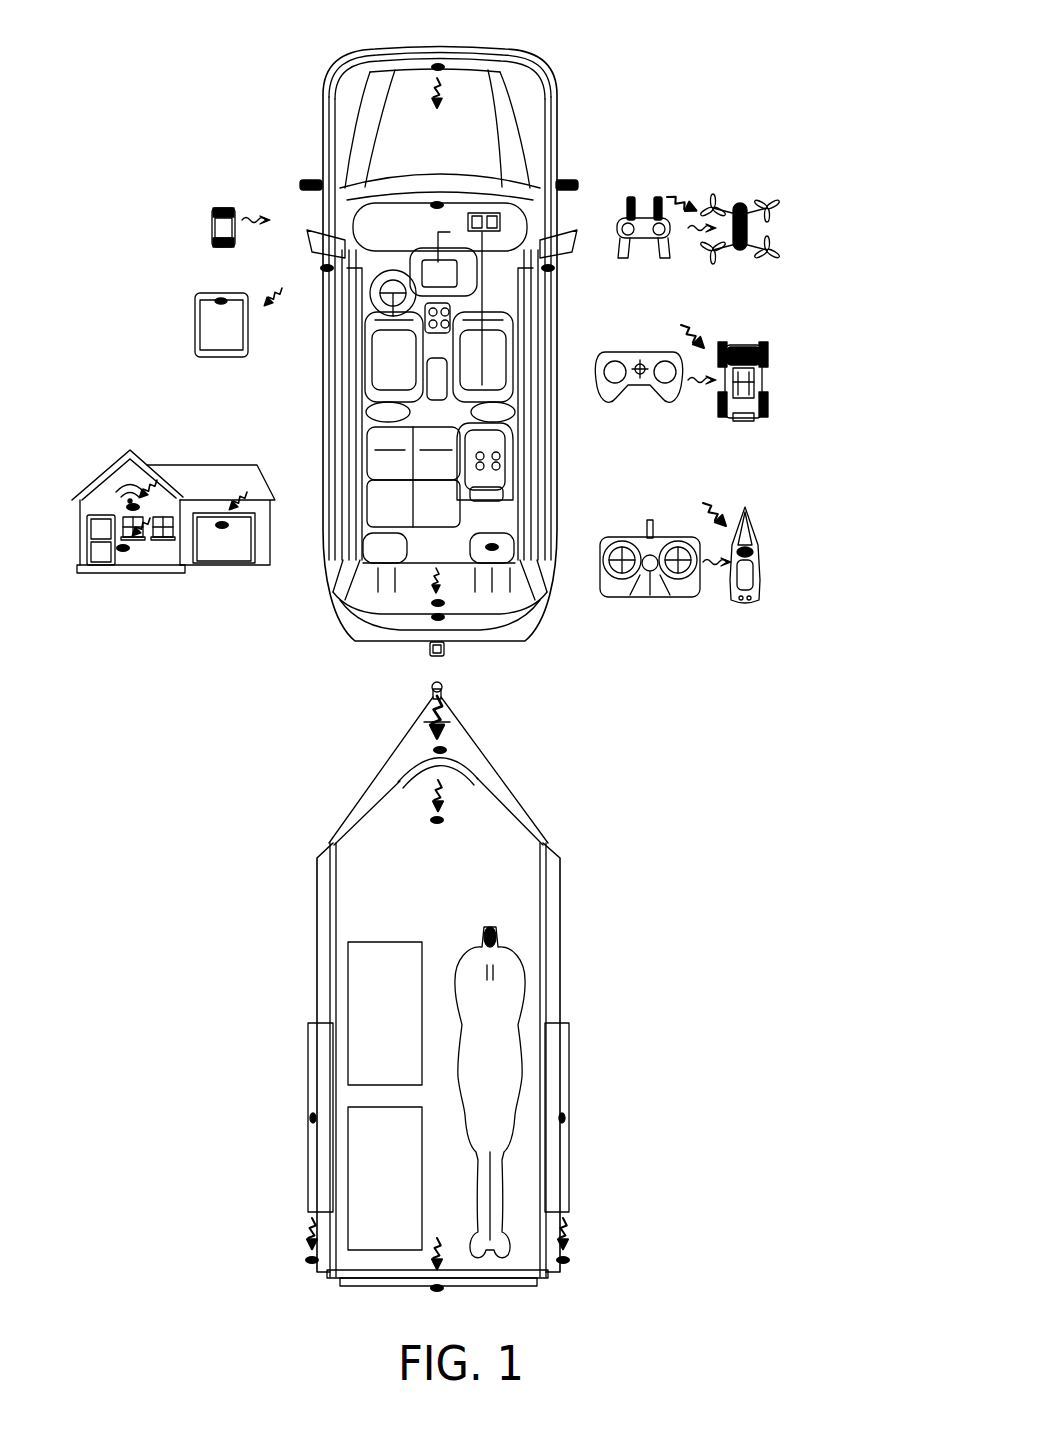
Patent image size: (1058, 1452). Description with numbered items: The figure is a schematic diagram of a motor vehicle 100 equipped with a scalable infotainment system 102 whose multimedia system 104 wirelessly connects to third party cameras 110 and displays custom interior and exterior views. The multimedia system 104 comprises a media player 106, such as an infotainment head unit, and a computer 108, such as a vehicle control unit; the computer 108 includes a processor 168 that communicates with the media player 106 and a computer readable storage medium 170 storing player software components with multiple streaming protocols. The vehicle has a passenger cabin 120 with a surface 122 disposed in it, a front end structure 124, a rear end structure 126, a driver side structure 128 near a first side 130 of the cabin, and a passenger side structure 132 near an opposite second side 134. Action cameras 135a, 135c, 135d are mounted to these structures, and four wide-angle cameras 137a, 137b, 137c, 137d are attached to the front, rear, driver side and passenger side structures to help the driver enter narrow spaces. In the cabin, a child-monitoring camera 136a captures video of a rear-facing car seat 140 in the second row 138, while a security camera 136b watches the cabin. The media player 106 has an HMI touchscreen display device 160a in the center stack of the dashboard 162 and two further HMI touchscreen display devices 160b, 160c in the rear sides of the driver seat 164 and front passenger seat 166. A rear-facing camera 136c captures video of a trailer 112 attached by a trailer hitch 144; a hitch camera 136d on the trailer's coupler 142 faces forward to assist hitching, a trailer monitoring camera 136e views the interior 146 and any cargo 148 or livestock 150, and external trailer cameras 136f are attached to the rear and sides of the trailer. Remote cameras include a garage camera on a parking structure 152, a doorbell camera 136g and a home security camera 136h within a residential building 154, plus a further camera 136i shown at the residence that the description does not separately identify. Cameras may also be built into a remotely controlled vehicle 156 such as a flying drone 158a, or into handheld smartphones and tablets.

The motor vehicle 100 is at (473, 367).
The scalable infotainment system 102 is at (195, 184).
The multimedia system 104 is at (498, 213).
The media player 106 is at (477, 441).
The computer 108 is at (503, 226).
The cameras 110 is at (523, 381).
The trailer 112 is at (439, 1017).
The passenger cabin 120 is at (458, 522).
The surface 122 is at (528, 610).
The front end structure 124 is at (460, 50).
The rear end structure 126 is at (456, 647).
The driver side structure 128 is at (215, 240).
The first side 130 is at (327, 267).
The passenger side structure 132 is at (726, 243).
The second side 134 is at (560, 263).
The action camera 135a is at (440, 58).
The action camera 135c is at (308, 182).
The action camera 135d is at (575, 183).
The child-monitoring camera 136a is at (495, 548).
The security camera 136b is at (432, 203).
The rear-facing camera 136c is at (433, 617).
The hitch camera 136d is at (428, 752).
The trailer monitoring camera 136e is at (432, 824).
The external trailer camera 136f is at (300, 1260).
The doorbell camera 136g is at (222, 528).
The home security camera 136h is at (123, 550).
The home wireless hub 136i is at (125, 478).
The wide-angle camera 137a is at (495, 75).
The wide-angle camera 137b is at (434, 604).
The wide-angle camera 137c is at (343, 280).
The wide-angle camera 137d is at (553, 273).
The second row 138 is at (512, 522).
The rear-facing car seat 140 is at (520, 497).
The coupler 142 is at (430, 695).
The trailer hitch 144 is at (443, 659).
The interior 146 is at (455, 890).
The cargo 148 is at (346, 1128).
The livestock 150 is at (505, 1217).
The parking structure 152 is at (249, 559).
The residential building 154 is at (147, 540).
The remotely controlled vehicle 156 is at (824, 381).
The flying drone 158a is at (768, 205).
The HMI touchscreen display device 160a is at (340, 318).
The HMI touchscreen display device 160b is at (345, 398).
The HMI touchscreen display device 160c is at (545, 398).
The dashboard 162 is at (418, 232).
The driver seat 164 is at (368, 397).
The front passenger seat 166 is at (516, 408).
The processor 168 is at (466, 220).
The non-transitory computer readable storage medium 170 is at (468, 212).